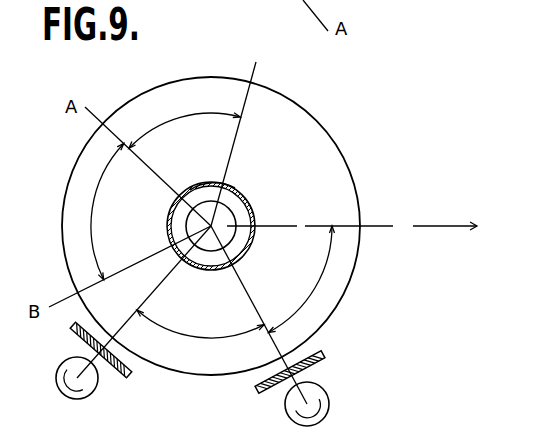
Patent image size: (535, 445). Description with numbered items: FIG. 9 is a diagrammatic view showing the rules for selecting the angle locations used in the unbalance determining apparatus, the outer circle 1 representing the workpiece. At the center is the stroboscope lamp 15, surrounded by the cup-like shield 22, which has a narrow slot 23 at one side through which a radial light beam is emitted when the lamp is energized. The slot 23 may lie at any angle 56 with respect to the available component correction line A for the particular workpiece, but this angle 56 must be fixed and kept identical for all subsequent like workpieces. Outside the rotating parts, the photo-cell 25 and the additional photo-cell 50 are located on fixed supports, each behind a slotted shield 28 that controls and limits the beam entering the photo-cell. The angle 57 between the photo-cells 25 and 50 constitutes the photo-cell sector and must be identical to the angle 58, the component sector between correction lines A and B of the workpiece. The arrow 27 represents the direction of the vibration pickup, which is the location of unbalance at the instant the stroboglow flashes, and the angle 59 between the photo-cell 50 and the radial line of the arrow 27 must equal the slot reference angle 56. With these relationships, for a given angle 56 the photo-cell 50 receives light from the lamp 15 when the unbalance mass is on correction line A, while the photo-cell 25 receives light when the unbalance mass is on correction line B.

The cylindrical drum 1 is at (72, 178).
The stroboscope lamp 15 is at (237, 212).
The cup-like shield 22 is at (248, 198).
The slot 23 is at (216, 184).
The photo-cell 25 is at (68, 396).
The arrow 27 is at (445, 215).
The slotted shield 28 is at (129, 375).
The additional photo-cell 50 is at (329, 406).
The slot reference angle 56 is at (184, 122).
The photo-cell sector angle 57 is at (200, 324).
The component sector angle 58 is at (107, 212).
The angle between photo-cell and arrow 59 is at (301, 279).